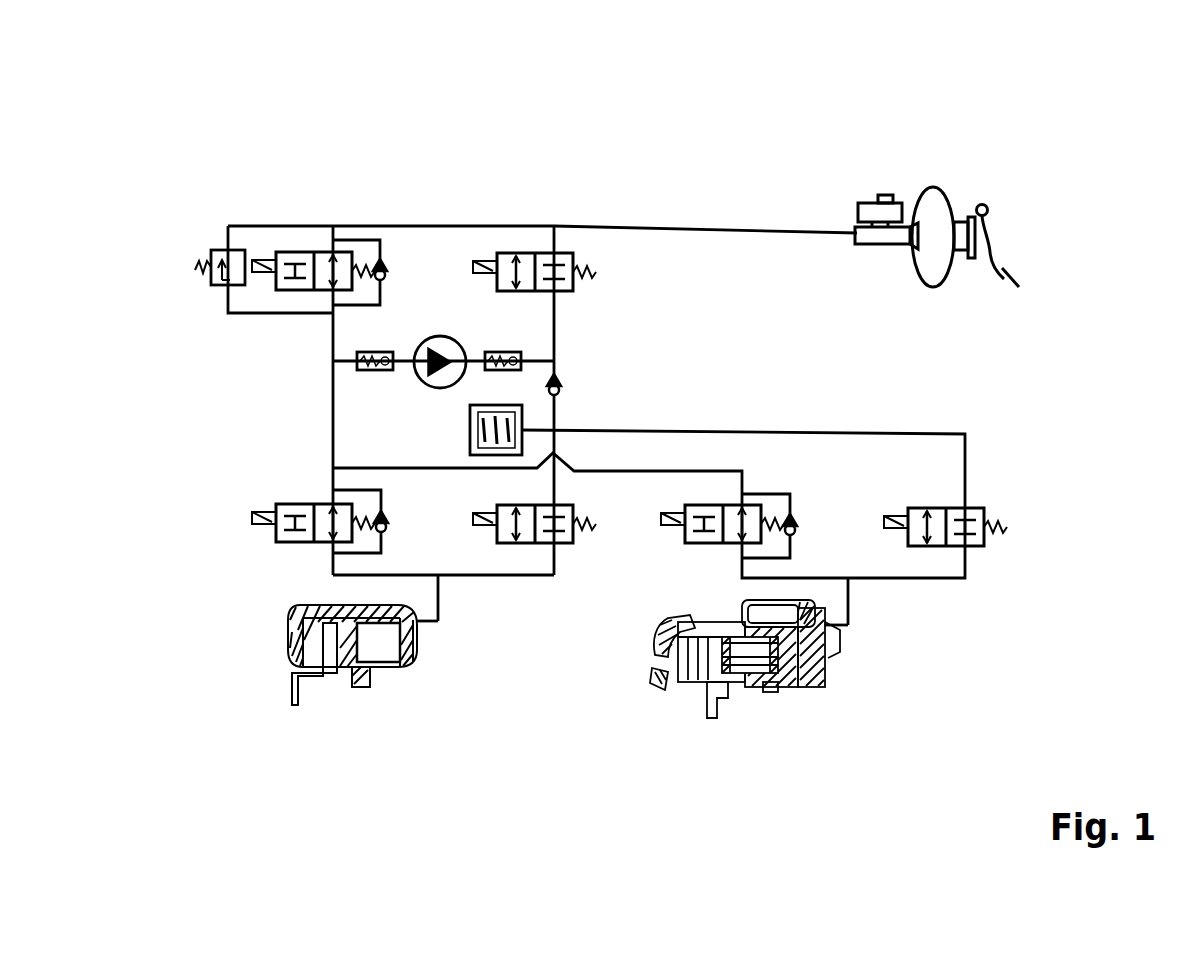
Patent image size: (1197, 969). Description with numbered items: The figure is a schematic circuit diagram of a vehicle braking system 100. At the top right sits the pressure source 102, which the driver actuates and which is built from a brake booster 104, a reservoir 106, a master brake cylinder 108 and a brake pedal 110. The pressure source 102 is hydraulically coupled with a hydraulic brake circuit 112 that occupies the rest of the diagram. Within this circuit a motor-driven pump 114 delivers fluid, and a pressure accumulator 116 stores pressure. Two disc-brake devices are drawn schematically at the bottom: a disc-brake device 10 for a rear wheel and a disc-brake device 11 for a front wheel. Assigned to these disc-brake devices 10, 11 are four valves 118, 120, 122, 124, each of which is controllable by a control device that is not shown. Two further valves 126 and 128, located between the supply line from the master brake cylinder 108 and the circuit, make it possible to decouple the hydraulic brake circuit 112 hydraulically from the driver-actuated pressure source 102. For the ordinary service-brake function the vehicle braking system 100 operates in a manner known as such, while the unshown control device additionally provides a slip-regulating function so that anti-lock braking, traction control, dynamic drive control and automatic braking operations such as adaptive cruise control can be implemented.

The vehicle braking system 100 is at (767, 208).
The pressure source 102 is at (990, 198).
The brake booster 104 is at (937, 204).
The reservoir 106 is at (900, 175).
The master brake cylinder 108 is at (882, 247).
The brake pedal 110 is at (1030, 240).
The hydraulic brake circuit 112 is at (490, 223).
The motor-driven pump 114 is at (330, 352).
The pressure accumulator 116 is at (468, 432).
The valve 118 is at (985, 508).
The valve 120 is at (690, 505).
The valve 122 is at (570, 545).
The valve 124 is at (275, 524).
The valve 126 is at (588, 226).
The valve 128 is at (300, 250).
The disc-brake device 10 is at (778, 692).
The disc-brake device 11 is at (395, 666).